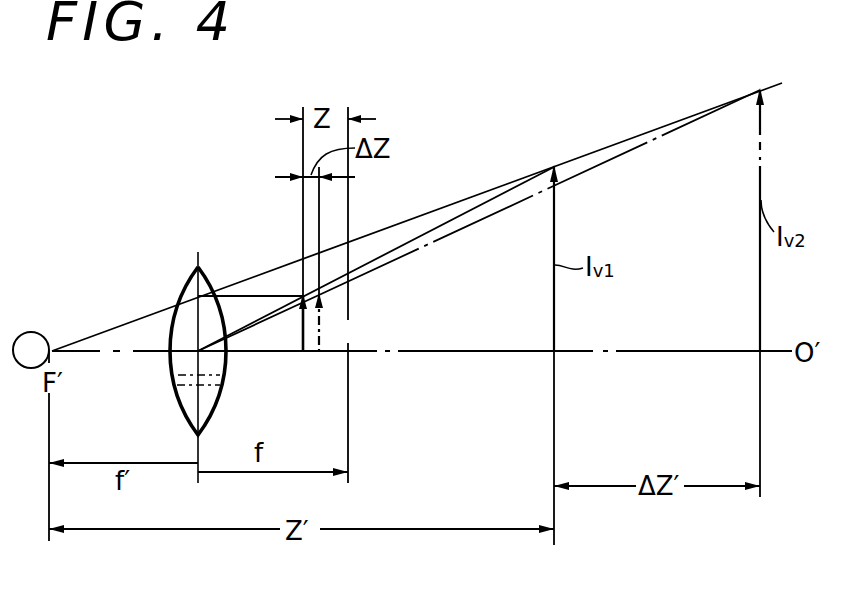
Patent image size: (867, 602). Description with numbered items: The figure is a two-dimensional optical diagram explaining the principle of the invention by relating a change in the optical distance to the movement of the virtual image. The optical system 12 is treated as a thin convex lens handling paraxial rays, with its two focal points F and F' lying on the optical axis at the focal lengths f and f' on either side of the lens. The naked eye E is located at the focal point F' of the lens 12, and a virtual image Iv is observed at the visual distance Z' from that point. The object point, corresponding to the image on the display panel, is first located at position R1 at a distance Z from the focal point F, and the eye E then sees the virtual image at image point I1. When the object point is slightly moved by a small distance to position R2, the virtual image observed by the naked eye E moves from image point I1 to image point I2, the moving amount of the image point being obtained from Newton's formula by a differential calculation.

The optical system 12 is at (209, 284).
The naked eye E is at (30, 332).
The object point position R1 is at (292, 247).
The moved object point position R2 is at (330, 277).
The focal point F is at (347, 295).
The first image point I1 is at (553, 355).
The second image point I2 is at (758, 292).